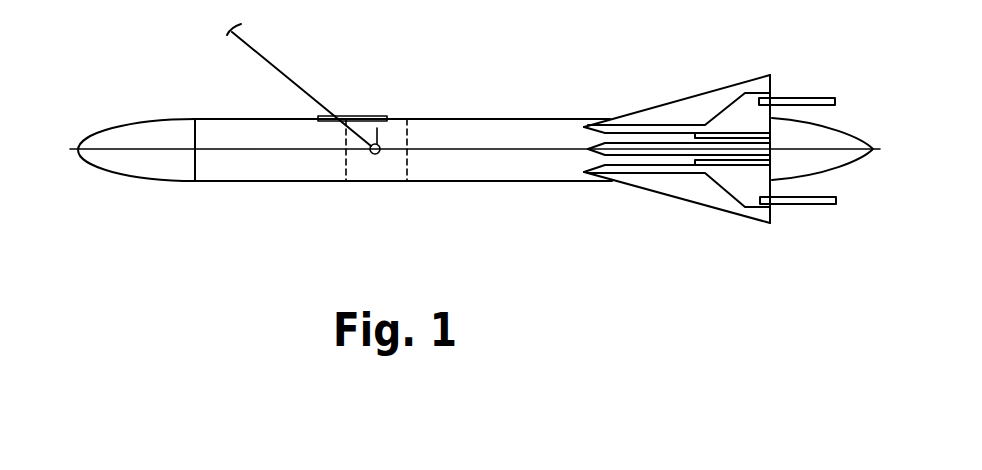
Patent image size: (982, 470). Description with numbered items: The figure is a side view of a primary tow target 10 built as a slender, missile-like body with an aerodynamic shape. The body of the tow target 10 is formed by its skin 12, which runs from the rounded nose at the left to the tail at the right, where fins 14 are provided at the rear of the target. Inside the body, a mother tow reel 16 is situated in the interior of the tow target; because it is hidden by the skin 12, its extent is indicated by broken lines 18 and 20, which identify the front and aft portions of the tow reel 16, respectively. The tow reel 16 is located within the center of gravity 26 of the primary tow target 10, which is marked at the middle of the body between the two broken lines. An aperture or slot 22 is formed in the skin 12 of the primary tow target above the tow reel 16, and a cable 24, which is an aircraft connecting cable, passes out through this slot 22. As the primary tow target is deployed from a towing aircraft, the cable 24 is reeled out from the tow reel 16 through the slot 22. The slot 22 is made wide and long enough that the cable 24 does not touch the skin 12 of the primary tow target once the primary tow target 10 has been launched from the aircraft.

The primary tow target 10 is at (487, 118).
The skin 12 is at (242, 133).
The fins 14 is at (712, 208).
The mother tow reel 16 is at (396, 135).
The broken line 18 is at (335, 160).
The broken line 20 is at (415, 168).
The slot 22 is at (355, 118).
The cable 24 is at (288, 72).
The center of gravity 26 is at (379, 154).